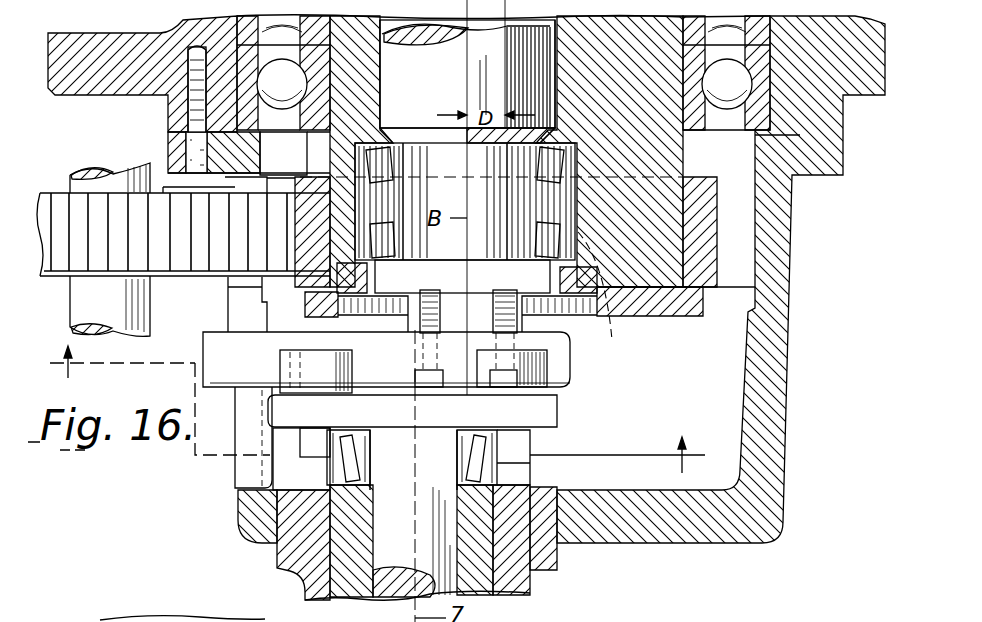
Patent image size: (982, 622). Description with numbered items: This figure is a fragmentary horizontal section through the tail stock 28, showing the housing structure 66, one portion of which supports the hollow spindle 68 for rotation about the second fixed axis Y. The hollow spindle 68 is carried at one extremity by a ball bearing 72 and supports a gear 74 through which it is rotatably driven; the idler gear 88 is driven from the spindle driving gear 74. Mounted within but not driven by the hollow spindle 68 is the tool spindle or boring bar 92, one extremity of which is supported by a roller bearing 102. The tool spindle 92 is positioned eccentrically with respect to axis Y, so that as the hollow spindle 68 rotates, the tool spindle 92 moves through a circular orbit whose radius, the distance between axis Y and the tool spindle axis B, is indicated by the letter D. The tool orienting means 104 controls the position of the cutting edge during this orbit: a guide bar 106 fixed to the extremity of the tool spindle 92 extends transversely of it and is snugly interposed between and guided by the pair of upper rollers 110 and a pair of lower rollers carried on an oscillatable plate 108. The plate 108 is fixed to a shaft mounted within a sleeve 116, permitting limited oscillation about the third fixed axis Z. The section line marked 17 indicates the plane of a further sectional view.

The idler gear 88 is at (60, 200).
The tool spindle 92 is at (445, 89).
The ball bearing 72 is at (753, 113).
The housing structure 66 is at (820, 140).
The tail stock 28 is at (811, 217).
The gear 74 is at (727, 272).
The hollow spindle 68 is at (660, 317).
The roller bearing 102 is at (610, 336).
The upper rollers 110 is at (337, 387).
The tool orienting means 104 is at (568, 447).
The guide bar 106 is at (210, 338).
The oscillatable plate 108 is at (277, 408).
The sleeve 116 is at (272, 573).
The section line 17 is at (720, 482).